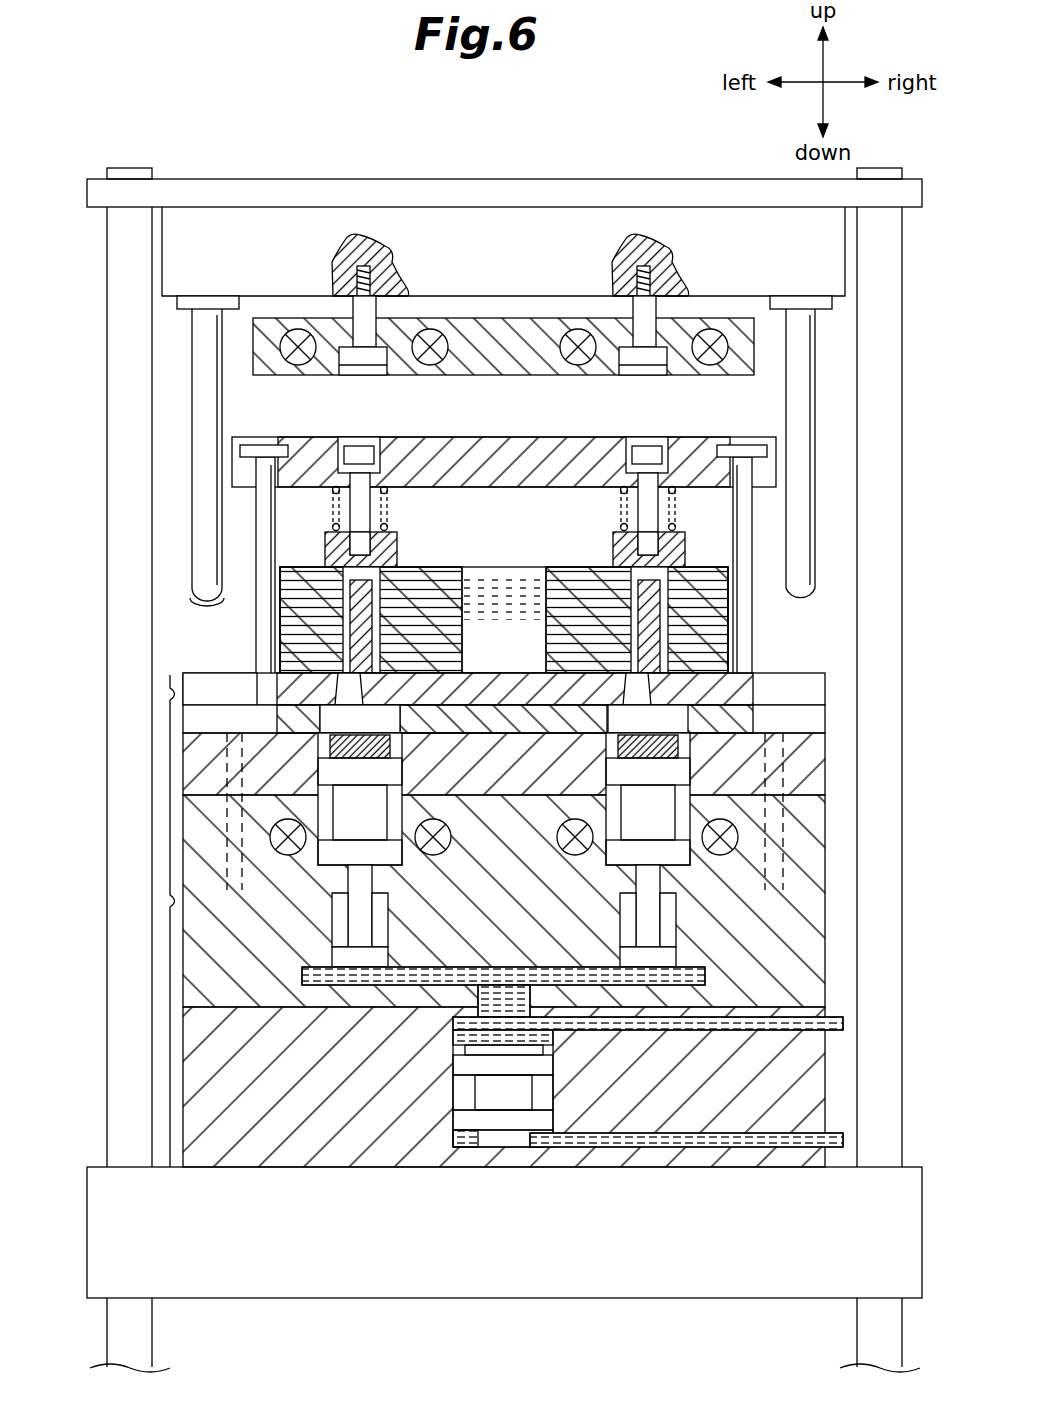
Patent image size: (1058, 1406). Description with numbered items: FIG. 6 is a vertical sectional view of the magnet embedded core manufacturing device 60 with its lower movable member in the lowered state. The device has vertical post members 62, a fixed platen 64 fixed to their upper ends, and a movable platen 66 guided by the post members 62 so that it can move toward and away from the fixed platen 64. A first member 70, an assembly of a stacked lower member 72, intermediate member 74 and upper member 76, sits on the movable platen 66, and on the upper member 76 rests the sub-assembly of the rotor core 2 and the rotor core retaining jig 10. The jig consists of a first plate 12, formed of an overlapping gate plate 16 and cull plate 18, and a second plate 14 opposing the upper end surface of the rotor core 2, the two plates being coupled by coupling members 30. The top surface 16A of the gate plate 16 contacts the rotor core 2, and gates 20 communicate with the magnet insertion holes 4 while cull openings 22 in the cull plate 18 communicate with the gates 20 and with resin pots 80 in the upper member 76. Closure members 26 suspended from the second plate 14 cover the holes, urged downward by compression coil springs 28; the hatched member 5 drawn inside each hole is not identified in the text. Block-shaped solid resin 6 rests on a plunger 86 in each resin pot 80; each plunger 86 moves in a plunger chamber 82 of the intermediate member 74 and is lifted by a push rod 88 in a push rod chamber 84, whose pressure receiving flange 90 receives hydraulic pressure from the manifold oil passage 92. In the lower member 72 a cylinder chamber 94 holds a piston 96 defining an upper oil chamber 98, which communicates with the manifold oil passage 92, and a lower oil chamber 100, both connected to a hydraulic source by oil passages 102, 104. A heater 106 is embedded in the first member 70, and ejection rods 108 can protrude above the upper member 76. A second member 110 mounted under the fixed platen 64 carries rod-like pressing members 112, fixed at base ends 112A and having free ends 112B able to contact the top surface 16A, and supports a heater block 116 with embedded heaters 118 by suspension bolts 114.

The rotor core 2 is at (504, 589).
The magnet insertion hole 4 is at (345, 605).
The core pin 5 is at (375, 610).
The solid resin 6 is at (390, 745).
The rotor core retaining jig 10 is at (494, 588).
The first plate 12 is at (170, 700).
The second plate 14 is at (525, 480).
The gate plate 16 is at (472, 690).
The top surface 16A is at (183, 690).
The cull plate 18 is at (535, 718).
The gate 20 is at (345, 680).
The cull opening 22 is at (335, 720).
The closure member 26 is at (322, 548).
The compression coil spring 28 is at (378, 440).
The coupling member 30 is at (262, 505).
The magnet embedded core manufacturing device 60 is at (499, 747).
The post member 62 is at (127, 535).
The fixed platen 64 is at (305, 192).
The movable platen 66 is at (612, 1290).
The first member 70 is at (170, 905).
The lower member 72 is at (810, 1100).
The intermediate member 74 is at (810, 870).
The upper member 76 is at (810, 765).
The resin pot 80 is at (318, 745).
The plunger chamber 82 is at (398, 810).
The push rod chamber 84 is at (388, 920).
The plunger 86 is at (318, 775).
The push rod 88 is at (348, 920).
The pressure receiving flange 90 is at (332, 955).
The manifold oil passage 92 is at (495, 972).
The cylinder chamber 94 is at (545, 1093).
The piston 96 is at (485, 1093).
The upper oil chamber 98 is at (555, 1030).
The lower oil chamber 100 is at (470, 1148).
The oil passage 102 is at (825, 1025).
The oil passage 104 is at (760, 1150).
The heater 106 is at (288, 855).
The ejection rod 108 is at (225, 825).
The second member 110 is at (697, 225).
The pressing member 112 is at (198, 385).
The base end 112A is at (207, 325).
The free end 112B is at (213, 606).
The suspension bolt 114 is at (355, 320).
The heater block 116 is at (530, 330).
The heater 118 is at (298, 366).